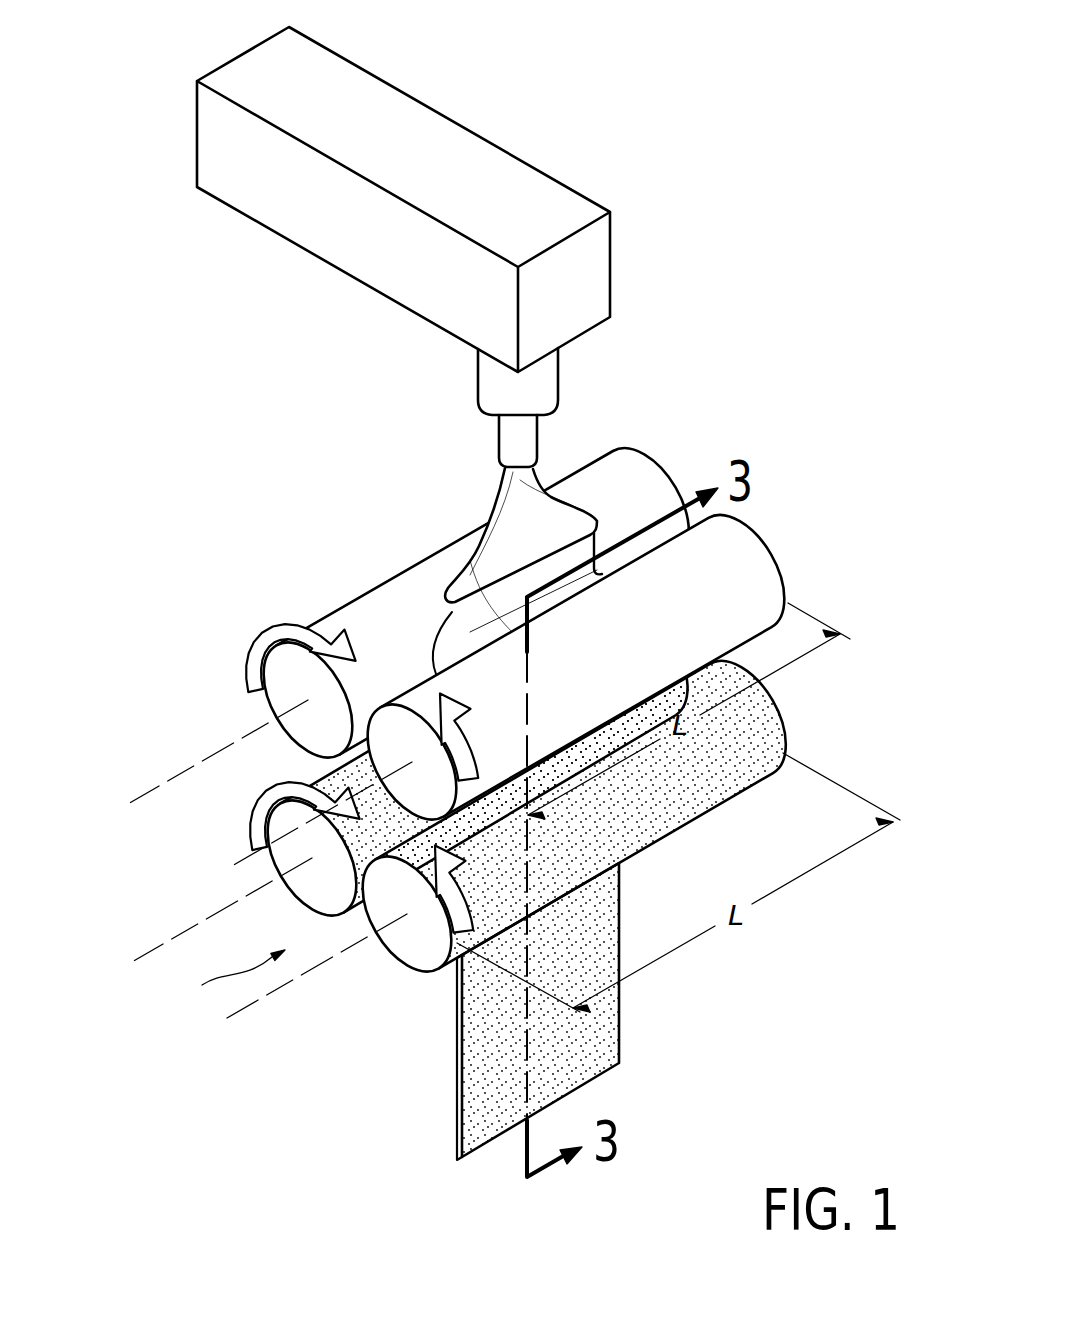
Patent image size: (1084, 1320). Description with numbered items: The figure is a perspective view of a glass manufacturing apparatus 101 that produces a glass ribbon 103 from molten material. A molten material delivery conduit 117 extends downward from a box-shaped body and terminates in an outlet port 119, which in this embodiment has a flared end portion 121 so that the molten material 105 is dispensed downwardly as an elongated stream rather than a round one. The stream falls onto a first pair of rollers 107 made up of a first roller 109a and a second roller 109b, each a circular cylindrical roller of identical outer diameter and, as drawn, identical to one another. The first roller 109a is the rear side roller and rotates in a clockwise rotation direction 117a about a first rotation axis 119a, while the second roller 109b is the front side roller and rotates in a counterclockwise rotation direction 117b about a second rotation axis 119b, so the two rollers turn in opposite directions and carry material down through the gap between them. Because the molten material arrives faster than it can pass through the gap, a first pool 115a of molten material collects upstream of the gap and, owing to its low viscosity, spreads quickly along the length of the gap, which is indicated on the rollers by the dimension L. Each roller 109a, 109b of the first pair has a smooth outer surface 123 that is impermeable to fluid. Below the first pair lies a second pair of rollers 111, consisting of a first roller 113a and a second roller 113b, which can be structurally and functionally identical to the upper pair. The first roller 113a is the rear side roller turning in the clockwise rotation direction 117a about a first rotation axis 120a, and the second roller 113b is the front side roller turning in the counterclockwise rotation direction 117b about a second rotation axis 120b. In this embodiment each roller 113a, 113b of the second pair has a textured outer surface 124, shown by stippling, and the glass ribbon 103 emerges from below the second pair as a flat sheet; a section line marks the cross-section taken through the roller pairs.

The glass manufacturing apparatus 101 is at (800, 80).
The glass ribbon 103 is at (605, 1030).
The molten material 105 is at (555, 593).
The first pair of rollers 107 is at (800, 455).
The first roller 109a is at (618, 460).
The second roller 109b is at (765, 542).
The second pair of rollers 111 is at (225, 984).
The first roller 113a is at (293, 897).
The second roller 113b is at (395, 965).
The first pool of molten material 115a is at (440, 640).
The molten material delivery conduit 117 is at (478, 372).
The clockwise rotation direction 117a is at (303, 616).
The counterclockwise rotation direction 117b is at (473, 748).
The outlet port 119 is at (513, 474).
The first rotation axis 119a is at (217, 752).
The second rotation axis 119b is at (243, 862).
The first rotation axis 120a is at (155, 947).
The second rotation axis 120b is at (258, 1000).
The flared end portion 121 is at (480, 557).
The smooth outer surface 123 is at (413, 681).
The textured outer surface 124 is at (400, 847).